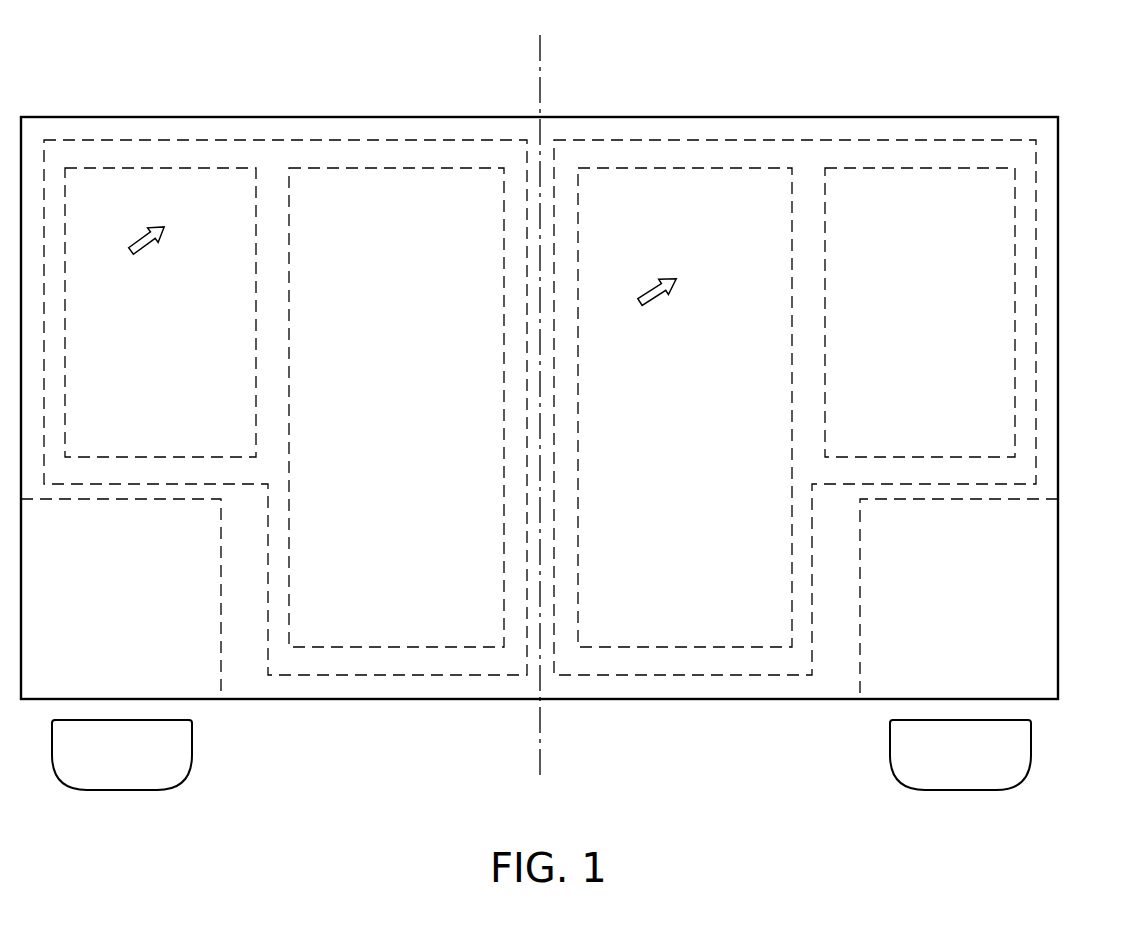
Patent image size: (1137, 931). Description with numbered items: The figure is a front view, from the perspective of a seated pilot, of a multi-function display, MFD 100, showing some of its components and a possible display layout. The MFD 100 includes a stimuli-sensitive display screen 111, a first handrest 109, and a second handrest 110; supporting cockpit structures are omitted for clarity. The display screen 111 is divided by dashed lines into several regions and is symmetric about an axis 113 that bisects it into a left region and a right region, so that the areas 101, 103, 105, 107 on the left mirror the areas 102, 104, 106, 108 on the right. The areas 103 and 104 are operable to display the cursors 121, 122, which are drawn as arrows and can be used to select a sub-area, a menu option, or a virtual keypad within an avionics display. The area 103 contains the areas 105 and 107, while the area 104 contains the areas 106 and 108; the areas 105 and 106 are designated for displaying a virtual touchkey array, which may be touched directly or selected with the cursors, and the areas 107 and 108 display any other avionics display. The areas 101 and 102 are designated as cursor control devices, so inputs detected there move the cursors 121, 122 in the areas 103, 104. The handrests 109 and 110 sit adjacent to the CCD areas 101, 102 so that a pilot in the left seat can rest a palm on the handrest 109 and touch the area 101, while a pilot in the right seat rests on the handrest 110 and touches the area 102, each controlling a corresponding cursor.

The MFD 100 is at (1028, 70).
The CCD area 101 is at (97, 603).
The CCD area 102 is at (940, 603).
The area 103 is at (268, 140).
The area 104 is at (812, 140).
The area 105 is at (180, 318).
The area 106 is at (897, 318).
The area 107 is at (369, 390).
The area 108 is at (668, 390).
The first handrest 109 is at (97, 765).
The second handrest 110 is at (938, 765).
The stimuli-sensitive display screen 111 is at (134, 117).
The axis 113 is at (540, 55).
The cursor 121 is at (140, 236).
The cursor 122 is at (655, 291).